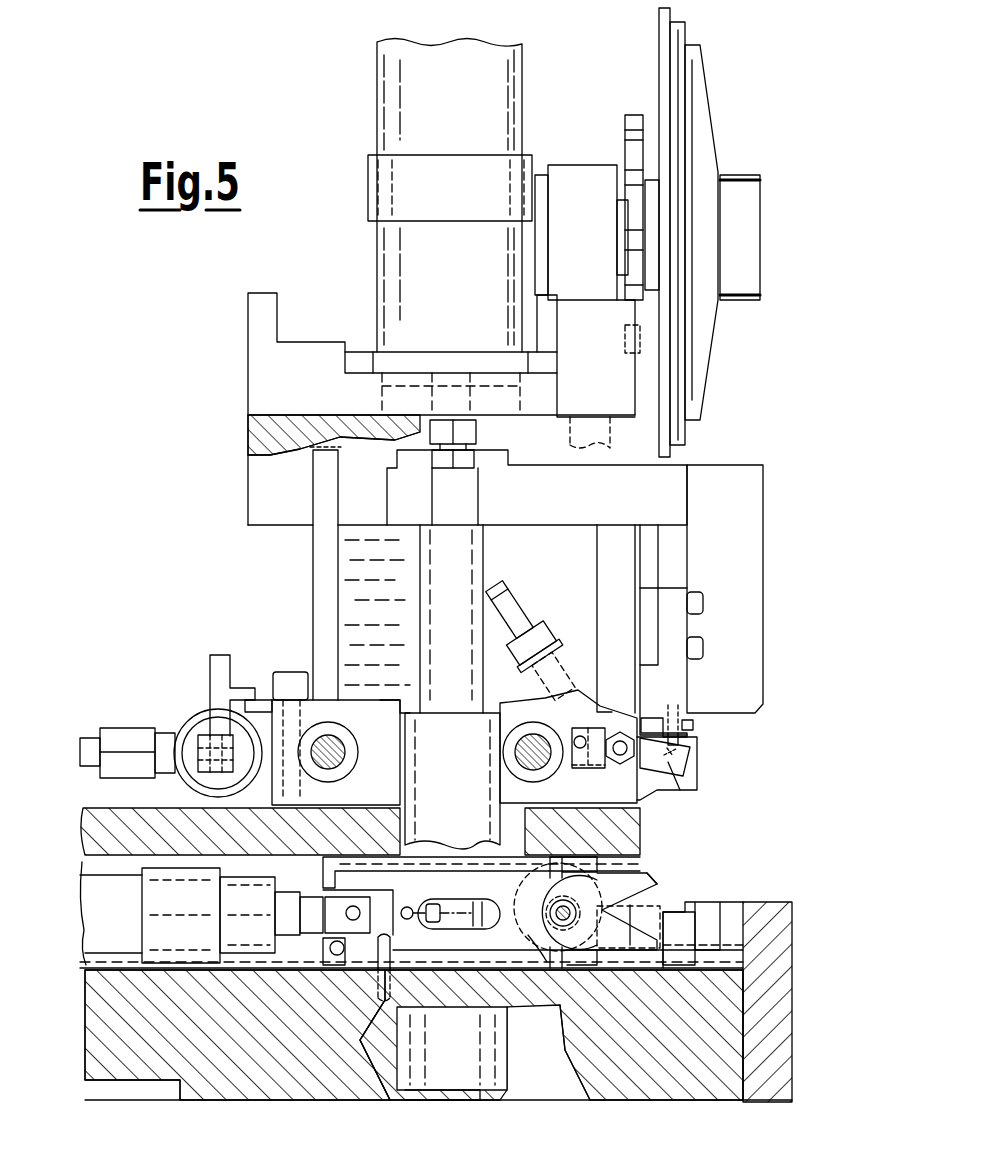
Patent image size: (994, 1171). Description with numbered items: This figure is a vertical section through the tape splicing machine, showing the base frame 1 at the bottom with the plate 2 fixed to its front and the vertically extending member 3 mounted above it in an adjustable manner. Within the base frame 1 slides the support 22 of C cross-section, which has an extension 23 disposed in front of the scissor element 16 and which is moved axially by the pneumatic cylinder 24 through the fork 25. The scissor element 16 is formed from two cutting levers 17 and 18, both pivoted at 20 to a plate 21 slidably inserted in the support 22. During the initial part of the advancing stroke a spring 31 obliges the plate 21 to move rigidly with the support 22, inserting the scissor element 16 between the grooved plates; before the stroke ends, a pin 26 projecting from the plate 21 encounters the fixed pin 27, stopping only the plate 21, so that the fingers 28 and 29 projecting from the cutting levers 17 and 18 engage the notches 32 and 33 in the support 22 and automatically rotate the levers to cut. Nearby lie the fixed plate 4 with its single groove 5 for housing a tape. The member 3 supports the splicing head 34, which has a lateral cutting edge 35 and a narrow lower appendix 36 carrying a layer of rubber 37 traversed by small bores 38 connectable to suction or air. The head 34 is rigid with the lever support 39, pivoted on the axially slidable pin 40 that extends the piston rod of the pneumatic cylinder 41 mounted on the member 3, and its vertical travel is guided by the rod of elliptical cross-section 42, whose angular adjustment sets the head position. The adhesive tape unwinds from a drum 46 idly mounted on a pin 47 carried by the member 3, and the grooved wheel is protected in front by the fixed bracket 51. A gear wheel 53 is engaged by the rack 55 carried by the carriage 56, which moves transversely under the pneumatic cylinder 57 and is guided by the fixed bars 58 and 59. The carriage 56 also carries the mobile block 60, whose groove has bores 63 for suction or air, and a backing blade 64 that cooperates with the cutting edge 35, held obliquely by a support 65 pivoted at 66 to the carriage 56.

The base frame 1 is at (116, 1040).
The plate 2 is at (768, 920).
The vertically extending member 3 is at (262, 483).
The fixed plate 4 is at (702, 891).
The groove 5 is at (682, 910).
The scissor element 16 is at (638, 862).
The cutting lever 17 is at (658, 884).
The cutting lever 18 is at (643, 937).
The pivot 20 is at (570, 942).
The plate 21 is at (449, 880).
The support 22 is at (360, 848).
The extension 23 is at (685, 935).
The pneumatic cylinder 24 is at (101, 940).
The fork 25 is at (330, 926).
The pin 26 is at (337, 955).
The fixed pin 27 is at (392, 942).
The finger 28 is at (552, 870).
The finger 29 is at (556, 972).
The spring 31 is at (455, 928).
The notch 32 is at (535, 895).
The notch 33 is at (545, 958).
The splicing head 34 is at (703, 692).
The lateral cutting edge 35 is at (650, 714).
The lower appendix 36 is at (693, 722).
The layer of rubber 37 is at (683, 737).
The small bores 38 is at (672, 722).
The lever support 39 is at (541, 513).
The axially slidable pin 40 is at (436, 607).
The pneumatic cylinder 41 is at (390, 104).
The rod of approximately elliptical cross-section 42 is at (578, 443).
The drum 46 is at (706, 140).
The pin 47 is at (738, 190).
The fixed bracket 51 is at (727, 484).
The gear wheel 53 is at (326, 545).
The rack 55 is at (342, 724).
The carriage 56 is at (384, 712).
The pneumatic cylinder 57 is at (200, 724).
The fixed bar 58 is at (345, 764).
The fixed bar 59 is at (510, 747).
The mobile block 60 is at (708, 790).
The bores 63 is at (682, 752).
The backing blade 64 is at (669, 765).
The support 65 is at (585, 768).
The pivot 66 is at (600, 770).